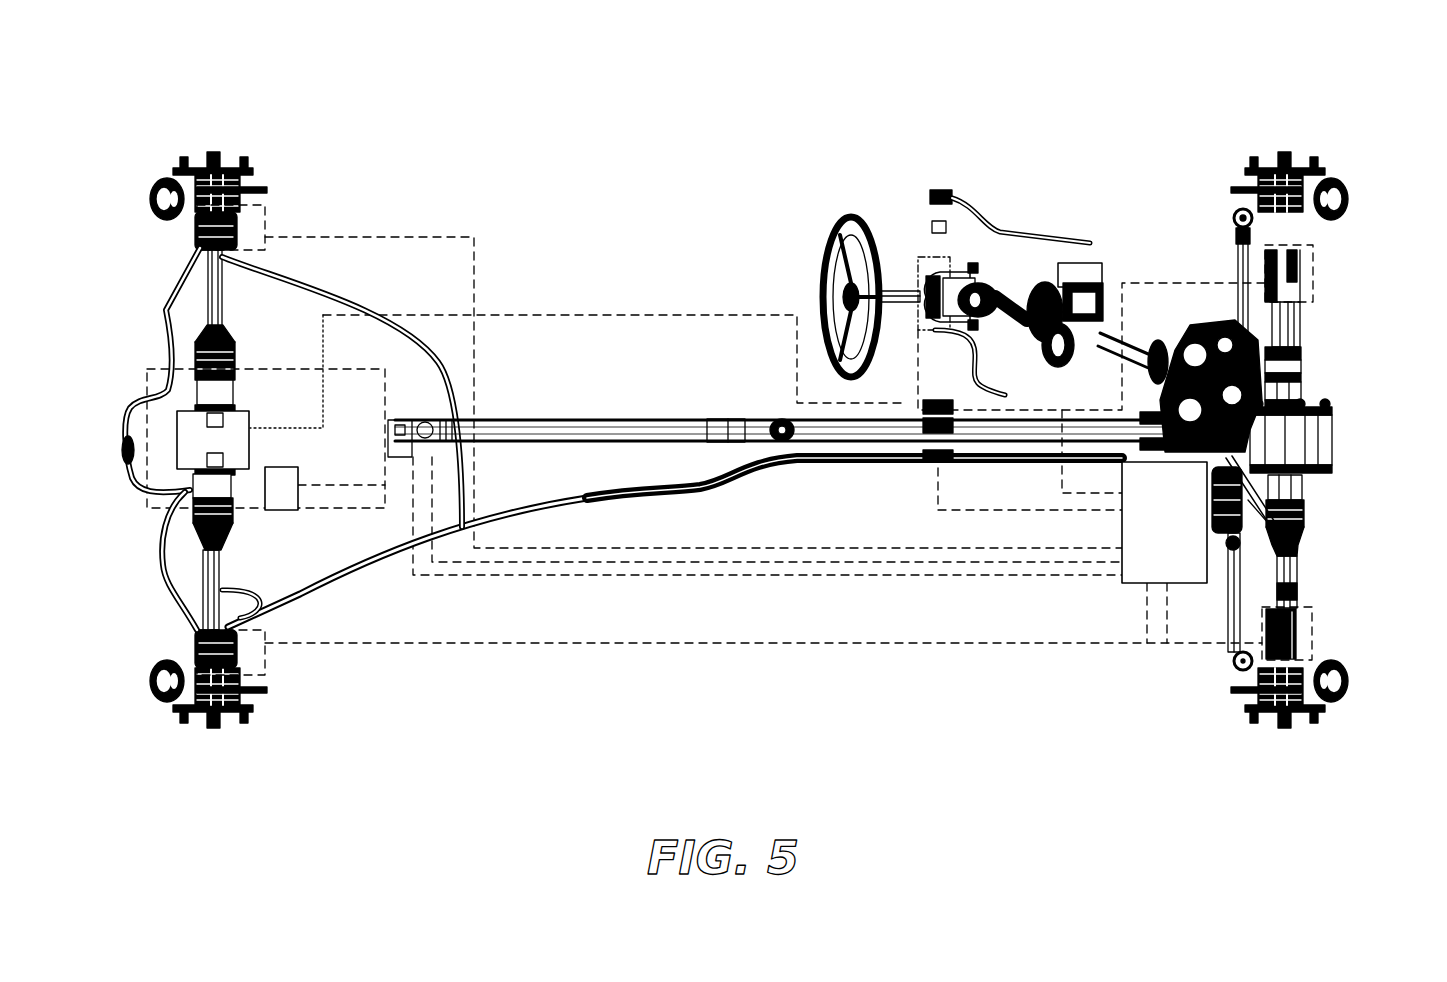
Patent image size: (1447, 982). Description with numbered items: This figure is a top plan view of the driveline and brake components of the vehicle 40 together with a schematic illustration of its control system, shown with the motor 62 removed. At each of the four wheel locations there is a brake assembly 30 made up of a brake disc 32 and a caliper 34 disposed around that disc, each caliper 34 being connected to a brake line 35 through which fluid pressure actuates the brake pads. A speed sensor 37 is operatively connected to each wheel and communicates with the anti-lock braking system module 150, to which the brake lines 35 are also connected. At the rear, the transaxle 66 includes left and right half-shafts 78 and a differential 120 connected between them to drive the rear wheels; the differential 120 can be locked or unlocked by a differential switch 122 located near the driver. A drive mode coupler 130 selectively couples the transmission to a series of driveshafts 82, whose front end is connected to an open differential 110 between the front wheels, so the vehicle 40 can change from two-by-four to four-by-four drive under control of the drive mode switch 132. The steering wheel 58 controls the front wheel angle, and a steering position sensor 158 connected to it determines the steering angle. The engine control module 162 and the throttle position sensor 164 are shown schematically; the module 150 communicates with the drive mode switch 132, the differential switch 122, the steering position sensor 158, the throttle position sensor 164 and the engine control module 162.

The brake assembly 30 is at (222, 93).
The brake disc 32 is at (253, 192).
The caliper 34 is at (155, 192).
The brake line 35 is at (165, 310).
The speed sensor 37 is at (265, 228).
The vehicle 40 is at (1083, 803).
The steering wheel 58 is at (848, 212).
The motor 62 is at (332, 423).
The transaxle 66 is at (245, 352).
The half-shaft 78 is at (225, 297).
The driveshaft 82 is at (520, 420).
The differential 110 is at (1355, 448).
The differential 120 is at (177, 417).
The differential switch 122 is at (912, 405).
The drive mode coupler 130 is at (389, 420).
The drive mode switch 132 is at (927, 472).
The anti-lock braking system module 150 is at (1146, 535).
The steering position sensor 158 is at (905, 255).
The engine control module 162 is at (278, 480).
The throttle position sensor 164 is at (281, 488).